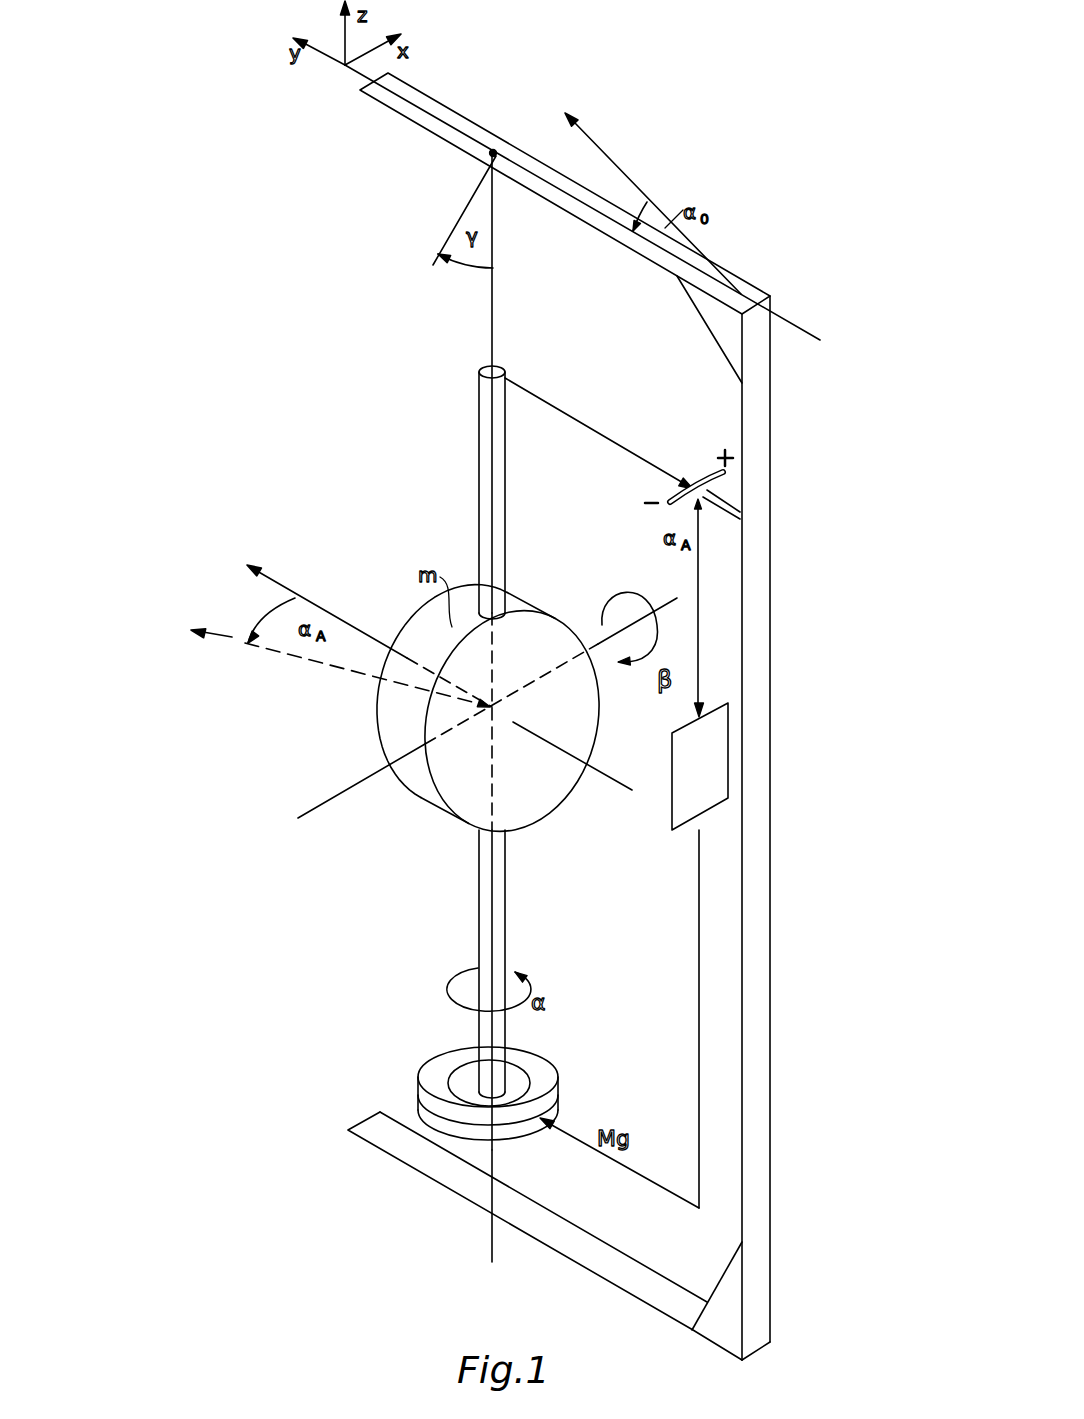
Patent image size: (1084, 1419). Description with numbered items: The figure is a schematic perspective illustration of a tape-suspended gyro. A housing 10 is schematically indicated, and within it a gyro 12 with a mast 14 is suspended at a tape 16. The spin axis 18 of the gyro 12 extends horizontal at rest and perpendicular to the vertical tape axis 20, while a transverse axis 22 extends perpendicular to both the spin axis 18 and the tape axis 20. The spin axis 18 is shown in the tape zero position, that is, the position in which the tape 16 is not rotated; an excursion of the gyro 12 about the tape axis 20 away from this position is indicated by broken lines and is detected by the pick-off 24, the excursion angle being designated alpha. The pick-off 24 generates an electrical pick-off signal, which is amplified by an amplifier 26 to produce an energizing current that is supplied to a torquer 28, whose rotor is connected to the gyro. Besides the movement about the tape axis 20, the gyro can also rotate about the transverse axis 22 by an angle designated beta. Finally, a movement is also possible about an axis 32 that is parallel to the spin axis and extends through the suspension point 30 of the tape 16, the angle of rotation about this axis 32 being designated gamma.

The housing 10 is at (755, 833).
The gyro 12 is at (368, 727).
The mast 14 is at (480, 520).
The tape 16 is at (495, 248).
The spin axis 18 is at (287, 588).
The tape axis 20 is at (488, 1231).
The transverse axis 22 is at (327, 802).
The pick-off 24 is at (703, 508).
The amplifier 26 is at (713, 773).
The torquer 28 is at (566, 1052).
The suspension point 30 is at (492, 149).
The axis 32 is at (800, 327).